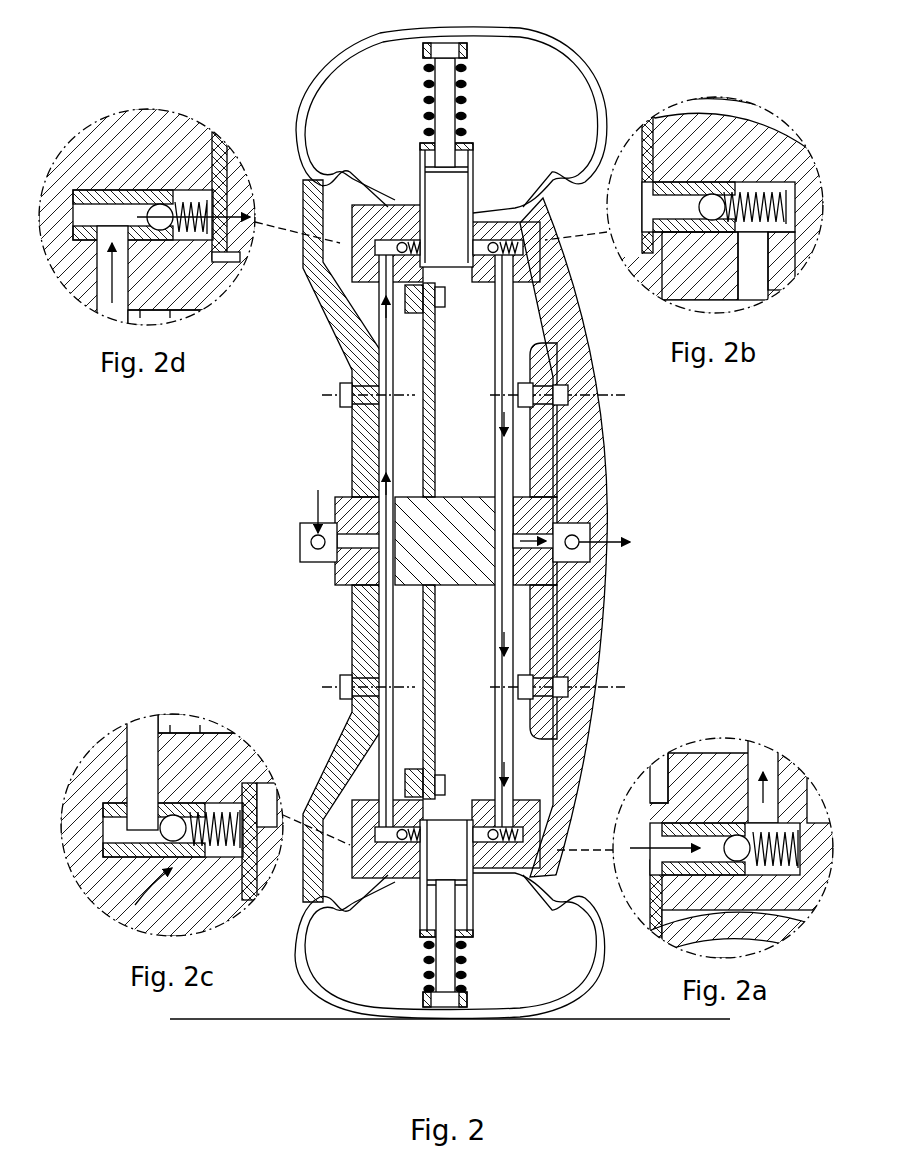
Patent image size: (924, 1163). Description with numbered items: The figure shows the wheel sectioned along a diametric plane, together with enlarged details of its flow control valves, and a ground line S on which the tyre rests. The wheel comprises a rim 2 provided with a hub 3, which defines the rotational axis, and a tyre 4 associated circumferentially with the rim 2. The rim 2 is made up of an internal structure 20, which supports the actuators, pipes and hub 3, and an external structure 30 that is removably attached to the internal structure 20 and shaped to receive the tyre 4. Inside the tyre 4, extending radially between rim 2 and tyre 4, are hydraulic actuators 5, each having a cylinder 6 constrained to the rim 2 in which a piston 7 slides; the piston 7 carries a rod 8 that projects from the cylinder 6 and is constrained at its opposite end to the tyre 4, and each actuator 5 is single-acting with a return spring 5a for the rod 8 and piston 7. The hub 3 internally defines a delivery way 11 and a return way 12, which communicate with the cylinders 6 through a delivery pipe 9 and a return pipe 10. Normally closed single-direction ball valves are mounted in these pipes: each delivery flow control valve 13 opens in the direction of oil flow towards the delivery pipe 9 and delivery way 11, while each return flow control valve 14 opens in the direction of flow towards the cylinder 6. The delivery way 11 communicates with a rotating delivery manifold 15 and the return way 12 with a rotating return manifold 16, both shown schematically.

In FIG. 2, the rim 2 is at (290, 248).
In FIG. 2, the hub 3 is at (456, 497).
In FIG. 2, the tyre 4 is at (498, 30).
In FIG. 2, the hydraulic actuator 5 is at (410, 102).
In FIG. 2, the return spring 5a is at (465, 85).
In FIG. 2, the cylinder 6 is at (476, 196).
In FIG. 2, the piston 7 is at (474, 172).
In FIG. 2, the rod 8 is at (452, 120).
In FIG. 2, the delivery pipe 9 is at (507, 633).
In FIG. 2, the return pipe 10 is at (378, 615).
In FIG. 2, the delivery way 11 is at (598, 510).
In FIG. 2, the return way 12 is at (352, 545).
In FIG. 2, the delivery flow control valve 13 is at (480, 268).
In FIG. 2B, the delivery flow control valve 13 is at (720, 156).
In FIG. 2A, the delivery flow control valve 13 is at (714, 806).
In FIG. 2, the return flow control valve 14 is at (365, 265).
In FIG. 2D, the return flow control valve 14 is at (163, 177).
In FIG. 2C, the return flow control valve 14 is at (135, 905).
In FIG. 2, the rotating delivery manifold 15 is at (600, 538).
In FIG. 2, the rotating return manifold 16 is at (303, 530).
In FIG. 2, the internal structure 20 is at (532, 292).
In FIG. 2, the external structure 30 is at (633, 631).
In FIG. 2, the ground surface S is at (605, 1018).